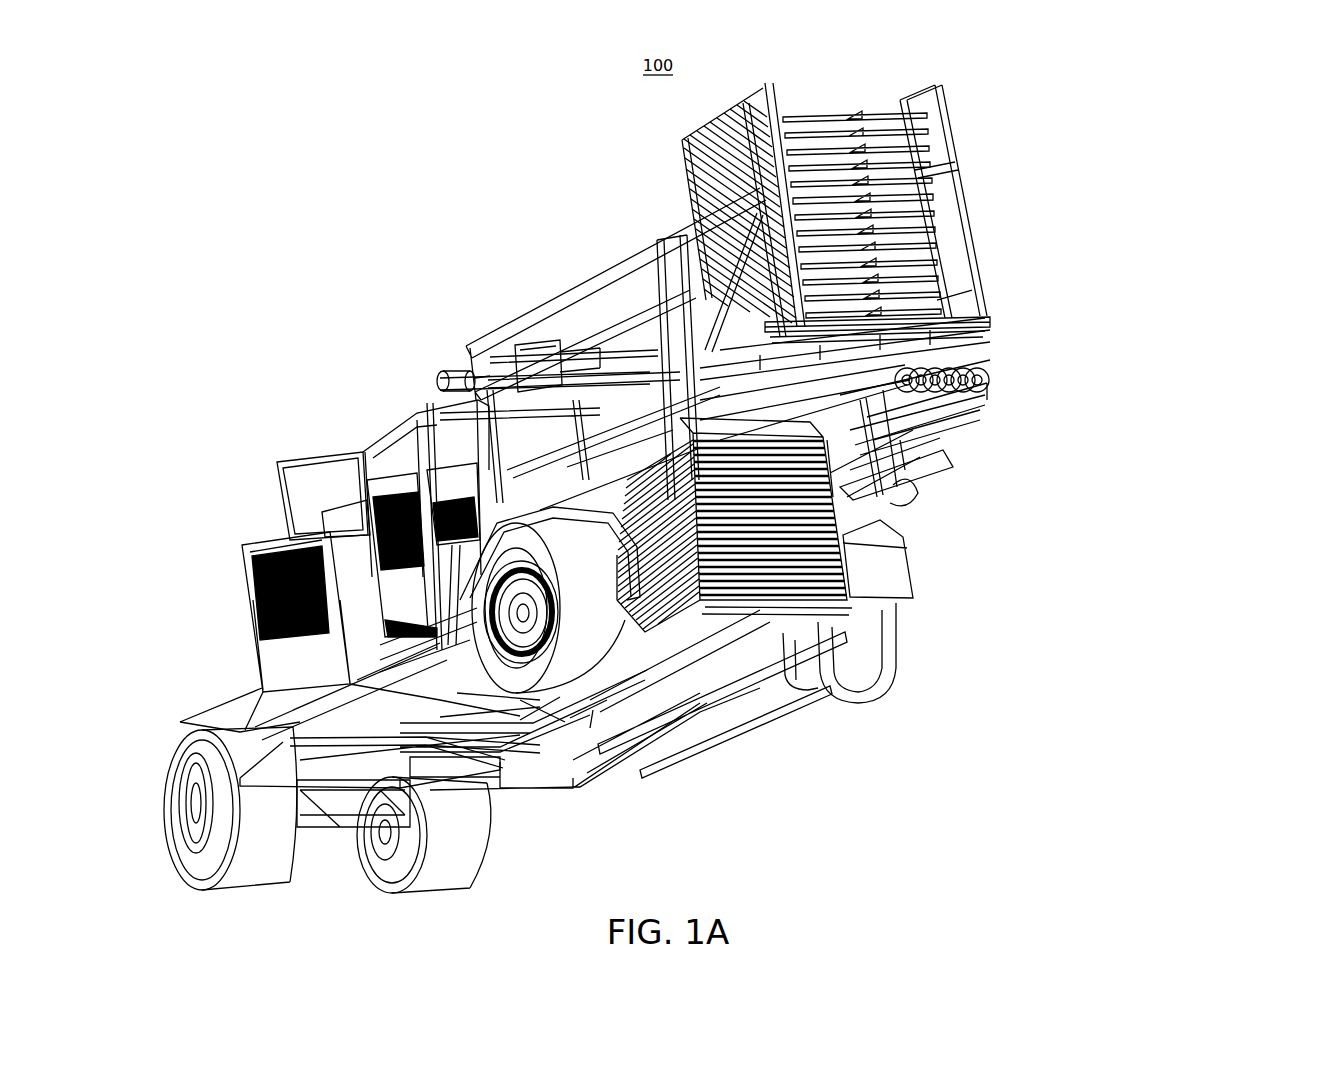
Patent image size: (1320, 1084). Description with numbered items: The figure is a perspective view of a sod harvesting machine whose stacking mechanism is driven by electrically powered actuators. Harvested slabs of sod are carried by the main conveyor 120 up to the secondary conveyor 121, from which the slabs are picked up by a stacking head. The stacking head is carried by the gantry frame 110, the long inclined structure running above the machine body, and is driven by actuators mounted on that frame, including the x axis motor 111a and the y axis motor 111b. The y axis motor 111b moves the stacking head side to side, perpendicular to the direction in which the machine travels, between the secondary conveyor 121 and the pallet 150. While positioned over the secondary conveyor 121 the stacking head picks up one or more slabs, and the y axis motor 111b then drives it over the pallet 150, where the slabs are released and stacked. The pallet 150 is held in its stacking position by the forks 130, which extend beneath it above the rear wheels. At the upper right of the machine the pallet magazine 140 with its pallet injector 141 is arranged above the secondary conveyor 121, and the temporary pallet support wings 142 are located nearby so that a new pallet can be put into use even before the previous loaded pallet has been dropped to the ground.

The gantry frame 110 is at (583, 278).
The x axis motor 111a is at (440, 376).
The y axis motor 111b is at (497, 332).
The main conveyor 120 is at (643, 747).
The secondary conveyor 121 is at (990, 378).
The forks 130 is at (843, 636).
The pallet magazine 140 is at (920, 177).
The pallet injector 141 is at (988, 323).
The temporary pallet support wings 142 is at (958, 456).
The pallet 150 is at (907, 557).